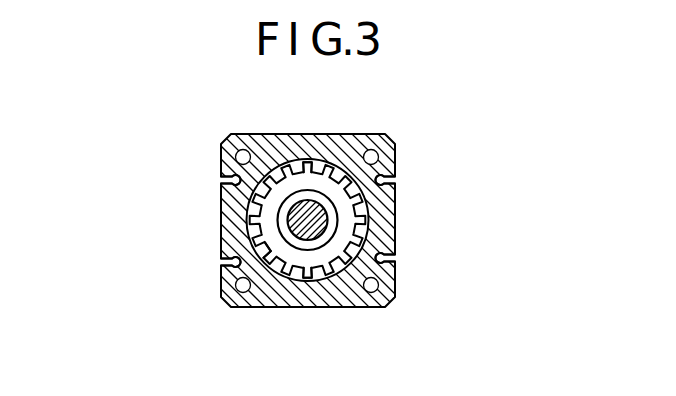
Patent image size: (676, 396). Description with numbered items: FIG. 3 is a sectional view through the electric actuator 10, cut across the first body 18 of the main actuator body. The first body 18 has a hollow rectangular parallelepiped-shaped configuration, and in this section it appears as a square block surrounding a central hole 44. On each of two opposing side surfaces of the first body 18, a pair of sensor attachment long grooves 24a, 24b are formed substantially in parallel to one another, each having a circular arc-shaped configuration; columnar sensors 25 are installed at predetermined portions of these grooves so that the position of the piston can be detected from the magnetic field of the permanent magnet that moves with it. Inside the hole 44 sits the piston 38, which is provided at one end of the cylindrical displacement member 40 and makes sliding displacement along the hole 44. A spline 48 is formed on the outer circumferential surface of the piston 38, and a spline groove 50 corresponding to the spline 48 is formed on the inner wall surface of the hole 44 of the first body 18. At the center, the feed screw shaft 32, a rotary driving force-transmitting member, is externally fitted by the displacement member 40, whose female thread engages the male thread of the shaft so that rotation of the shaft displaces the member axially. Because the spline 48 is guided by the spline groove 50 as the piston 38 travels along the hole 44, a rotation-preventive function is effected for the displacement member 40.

The electric actuator 10 is at (417, 128).
The first body 18 is at (272, 143).
The sensor attachment long groove 24a is at (227, 182).
The sensor attachment long groove 24b is at (228, 262).
The columnar sensor 25 is at (395, 181).
The feed screw shaft 32 is at (322, 216).
The piston 38 is at (286, 258).
The displacement member 40 is at (320, 192).
The hole 44 is at (270, 263).
The spline 48 is at (306, 160).
The spline groove 50 is at (362, 171).